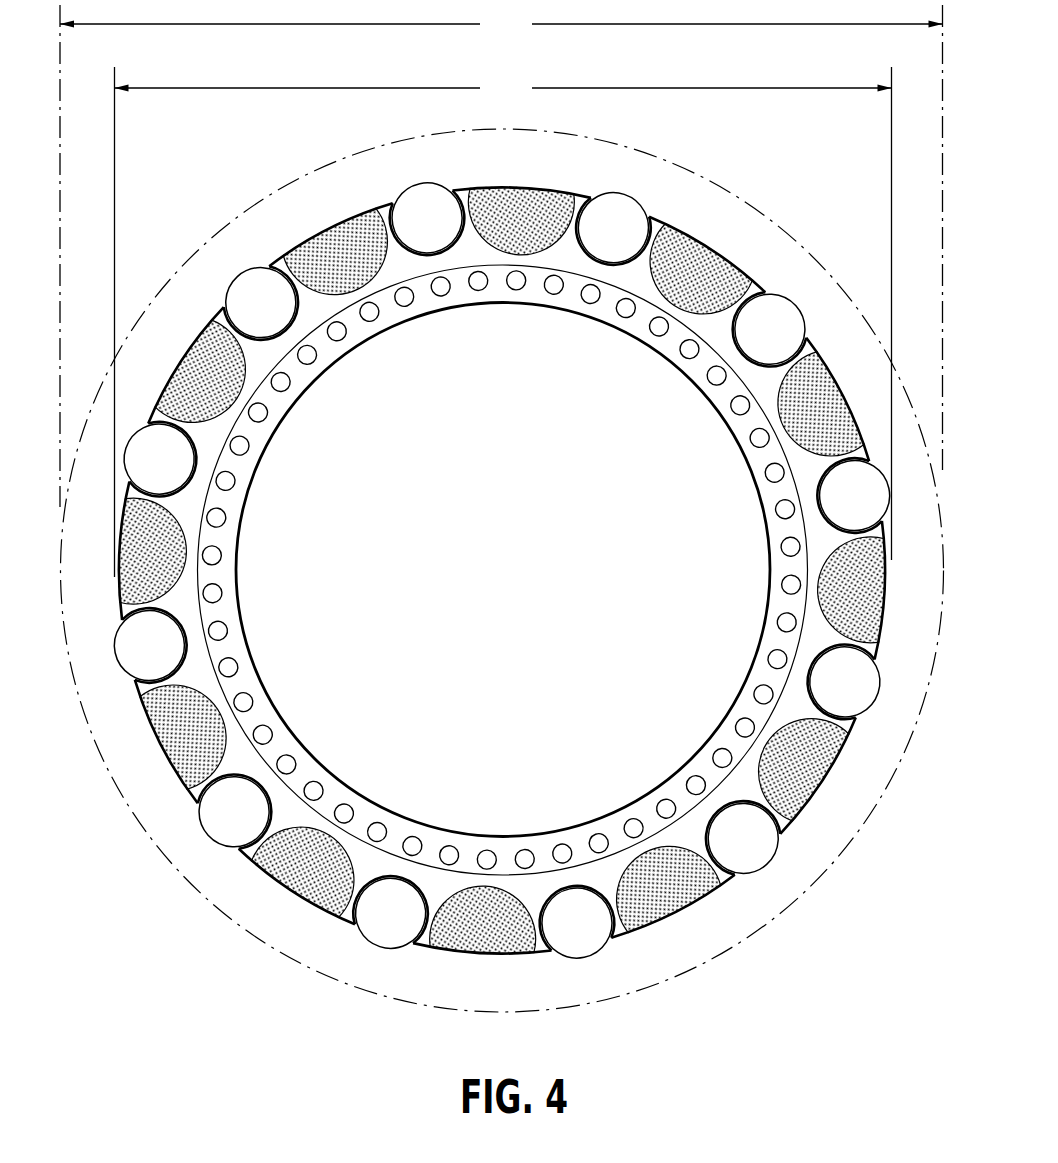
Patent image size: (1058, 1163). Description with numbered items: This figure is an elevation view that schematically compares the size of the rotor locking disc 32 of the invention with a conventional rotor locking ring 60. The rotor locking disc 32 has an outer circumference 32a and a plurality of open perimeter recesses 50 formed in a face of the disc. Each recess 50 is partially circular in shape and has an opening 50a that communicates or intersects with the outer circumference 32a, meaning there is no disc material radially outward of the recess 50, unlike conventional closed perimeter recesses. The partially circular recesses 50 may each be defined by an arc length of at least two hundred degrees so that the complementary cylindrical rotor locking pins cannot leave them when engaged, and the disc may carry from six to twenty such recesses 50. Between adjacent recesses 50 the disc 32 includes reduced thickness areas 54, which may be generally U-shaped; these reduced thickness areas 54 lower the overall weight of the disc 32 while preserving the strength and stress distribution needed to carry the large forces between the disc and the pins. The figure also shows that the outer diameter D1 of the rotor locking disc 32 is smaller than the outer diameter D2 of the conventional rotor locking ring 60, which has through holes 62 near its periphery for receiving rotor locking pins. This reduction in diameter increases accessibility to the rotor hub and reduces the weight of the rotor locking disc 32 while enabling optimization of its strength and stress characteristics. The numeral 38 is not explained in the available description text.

The rotor locking disc 32 is at (376, 194).
The outer circumference 32a is at (273, 262).
The through holes 38 is at (516, 299).
The open perimeter recesses 50 is at (632, 250).
The openings 50a is at (626, 203).
The reduced thickness areas 54 is at (536, 201).
The conventional rotor locking ring 60 is at (160, 853).
The through holes 62 is at (797, 302).
The outer diameter of the rotor locking disc D1 is at (503, 321).
The outer diameter of the conventional rotor locking ring D2 is at (501, 255).